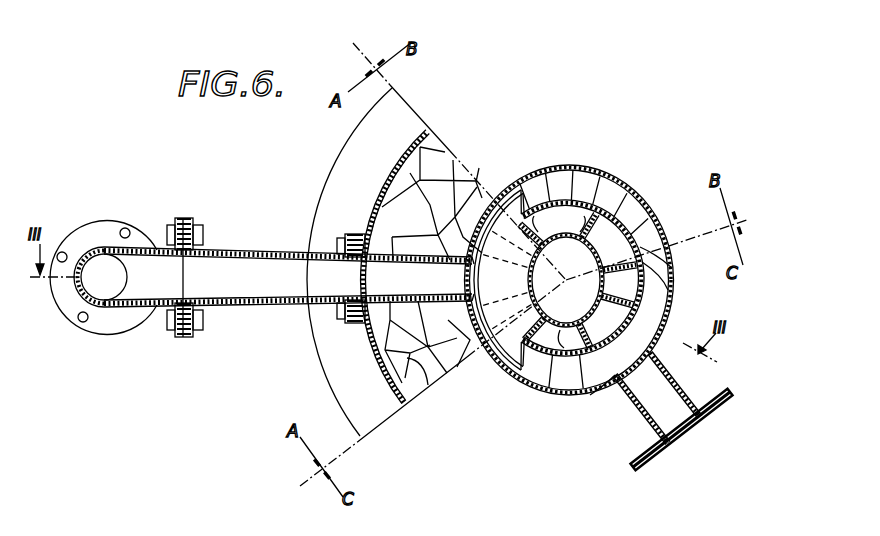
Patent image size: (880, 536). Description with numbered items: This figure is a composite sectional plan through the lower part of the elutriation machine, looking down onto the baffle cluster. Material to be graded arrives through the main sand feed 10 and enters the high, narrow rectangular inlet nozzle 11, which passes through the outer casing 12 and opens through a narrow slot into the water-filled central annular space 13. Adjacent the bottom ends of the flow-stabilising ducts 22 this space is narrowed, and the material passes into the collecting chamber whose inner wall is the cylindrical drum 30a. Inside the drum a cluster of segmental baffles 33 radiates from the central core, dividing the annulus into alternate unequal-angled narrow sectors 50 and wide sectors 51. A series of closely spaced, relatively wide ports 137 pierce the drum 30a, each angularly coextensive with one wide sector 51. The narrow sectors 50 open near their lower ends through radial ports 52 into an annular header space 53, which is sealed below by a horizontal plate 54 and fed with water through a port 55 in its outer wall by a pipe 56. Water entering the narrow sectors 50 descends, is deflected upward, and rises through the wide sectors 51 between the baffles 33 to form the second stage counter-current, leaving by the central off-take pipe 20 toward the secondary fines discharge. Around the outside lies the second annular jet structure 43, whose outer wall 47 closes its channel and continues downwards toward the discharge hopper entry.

The main sand feed 10 is at (107, 252).
The inlet nozzle 11 is at (247, 263).
The outer casing 12 is at (380, 192).
The central annular space 13 is at (467, 279).
The central off-take pipe 20 is at (530, 275).
The flow-stabilising ducts 22 is at (430, 160).
The cylindrical drum 30a is at (598, 176).
The segmental baffles 33 is at (583, 237).
The second annular jet structure 43 is at (477, 180).
The outer wall 47 is at (652, 232).
The narrow sectors 50 is at (590, 296).
The wide sectors 51 is at (552, 205).
The radial ports 52 is at (662, 270).
The annular header space 53 is at (650, 296).
The horizontal plate 54 is at (592, 341).
The port 55 is at (632, 372).
The pipe 56 is at (657, 425).
The ports 137 is at (518, 205).